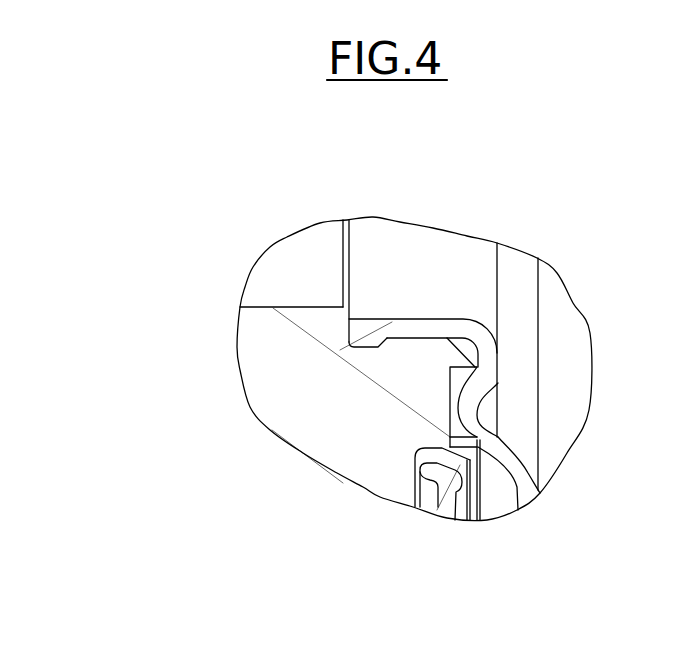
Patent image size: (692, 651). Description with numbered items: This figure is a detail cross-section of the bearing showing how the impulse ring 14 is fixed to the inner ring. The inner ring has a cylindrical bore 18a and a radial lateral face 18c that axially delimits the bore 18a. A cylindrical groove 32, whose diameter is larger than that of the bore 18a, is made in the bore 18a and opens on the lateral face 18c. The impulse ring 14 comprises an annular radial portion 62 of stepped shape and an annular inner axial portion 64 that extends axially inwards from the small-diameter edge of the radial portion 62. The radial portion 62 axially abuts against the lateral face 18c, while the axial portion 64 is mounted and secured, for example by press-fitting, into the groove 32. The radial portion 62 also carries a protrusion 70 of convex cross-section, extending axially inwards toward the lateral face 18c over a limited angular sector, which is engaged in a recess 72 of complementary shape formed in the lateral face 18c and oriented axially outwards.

The impulse ring 14 is at (500, 365).
The bore 18a is at (290, 307).
The lateral face 18c is at (470, 518).
The groove 32 is at (420, 336).
The radial portion 62 is at (527, 488).
The axial portion 64 is at (393, 333).
The protrusion 70 is at (467, 405).
The recess 72 is at (482, 440).